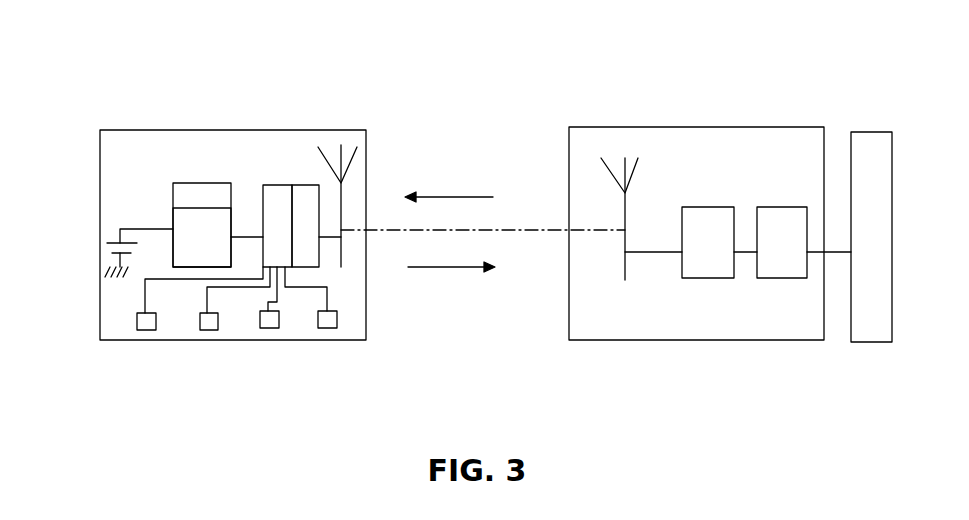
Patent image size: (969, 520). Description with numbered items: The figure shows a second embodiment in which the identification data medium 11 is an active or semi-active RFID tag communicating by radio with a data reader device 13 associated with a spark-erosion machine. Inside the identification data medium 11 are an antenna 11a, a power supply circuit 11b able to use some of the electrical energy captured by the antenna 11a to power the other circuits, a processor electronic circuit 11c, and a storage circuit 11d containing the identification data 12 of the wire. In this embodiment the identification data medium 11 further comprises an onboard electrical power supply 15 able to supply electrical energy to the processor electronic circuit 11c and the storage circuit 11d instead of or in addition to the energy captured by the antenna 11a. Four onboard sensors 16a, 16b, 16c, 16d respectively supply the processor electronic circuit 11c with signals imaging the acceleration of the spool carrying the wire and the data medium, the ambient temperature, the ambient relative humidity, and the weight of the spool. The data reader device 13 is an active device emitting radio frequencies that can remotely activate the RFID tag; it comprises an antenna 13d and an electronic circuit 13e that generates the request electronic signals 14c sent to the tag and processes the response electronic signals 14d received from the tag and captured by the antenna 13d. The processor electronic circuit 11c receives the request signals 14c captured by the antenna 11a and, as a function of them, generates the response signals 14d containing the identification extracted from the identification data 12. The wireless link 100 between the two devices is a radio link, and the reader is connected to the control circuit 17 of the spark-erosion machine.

The identification data medium 11 is at (215, 130).
The antenna 11a is at (342, 197).
The power supply circuit 11b is at (303, 197).
The processor electronic circuit 11c is at (280, 197).
The storage circuit 11d is at (173, 217).
The identification data 12 is at (129, 195).
The data reader device 13 is at (751, 128).
The antenna 13d is at (628, 212).
The electronic circuit 13e is at (707, 272).
The request electronic signals 14c is at (440, 197).
The response electronic signals 14d is at (450, 270).
The onboard electrical power supply 15 is at (110, 242).
The onboard sensor 16a is at (142, 330).
The onboard sensor 16b is at (207, 332).
The onboard sensor 16c is at (265, 330).
The onboard sensor 16d is at (327, 330).
The control circuit 17 is at (866, 148).
The wireless link 100 is at (517, 230).